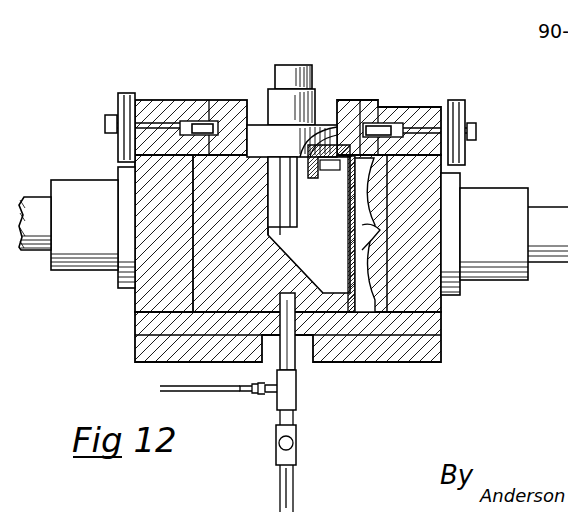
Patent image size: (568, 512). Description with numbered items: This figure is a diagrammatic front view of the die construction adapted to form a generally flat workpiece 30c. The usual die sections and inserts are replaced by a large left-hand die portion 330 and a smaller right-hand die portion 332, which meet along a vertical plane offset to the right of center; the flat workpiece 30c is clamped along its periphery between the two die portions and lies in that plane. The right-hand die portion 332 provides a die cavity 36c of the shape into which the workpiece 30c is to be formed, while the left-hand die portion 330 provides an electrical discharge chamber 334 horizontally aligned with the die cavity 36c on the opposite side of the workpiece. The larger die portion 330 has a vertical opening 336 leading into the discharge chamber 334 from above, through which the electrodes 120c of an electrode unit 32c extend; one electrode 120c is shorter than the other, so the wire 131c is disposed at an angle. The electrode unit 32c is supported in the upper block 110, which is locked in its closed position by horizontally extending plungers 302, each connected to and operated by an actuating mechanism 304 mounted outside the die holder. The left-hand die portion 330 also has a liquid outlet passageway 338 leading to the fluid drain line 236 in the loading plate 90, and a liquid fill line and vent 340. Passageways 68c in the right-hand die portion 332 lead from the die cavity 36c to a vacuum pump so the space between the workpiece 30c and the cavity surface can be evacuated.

The electrode unit 32c is at (303, 54).
The upper block 110 is at (323, 97).
The vertical opening 336 is at (270, 167).
The left-hand die portion 330 is at (230, 140).
The liquid fill line and vent 340 is at (352, 167).
The plunger 302 is at (158, 122).
The actuating mechanism 304 is at (118, 100).
The electrode 120c is at (293, 190).
The wire 131c is at (282, 216).
The flat workpiece 30c is at (348, 208).
The electrical discharge chamber 334 is at (341, 273).
The die cavity 36c is at (385, 188).
The passageways 68c is at (378, 230).
The right-hand die portion 332 is at (380, 300).
The liquid outlet passageway 338 is at (297, 340).
The loading plate 90 is at (363, 340).
The fluid drain line 236 is at (292, 410).